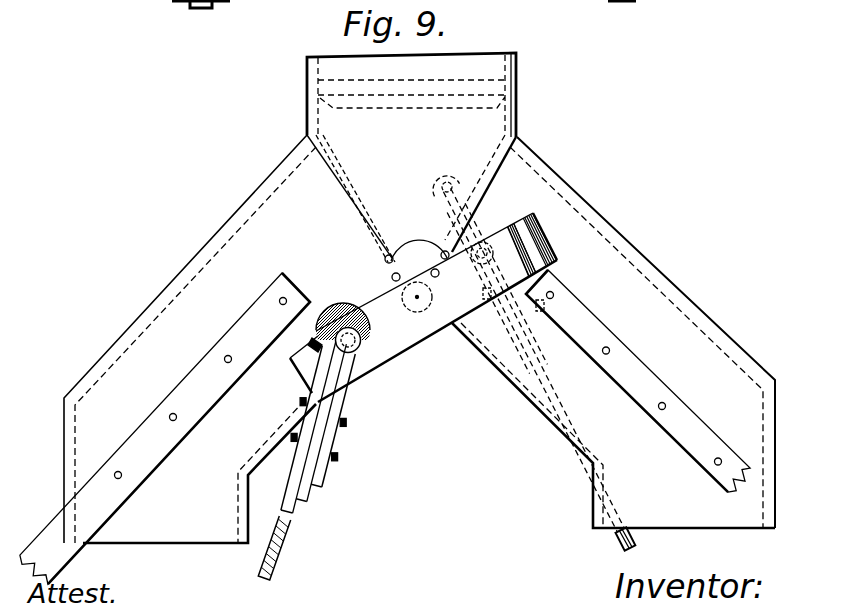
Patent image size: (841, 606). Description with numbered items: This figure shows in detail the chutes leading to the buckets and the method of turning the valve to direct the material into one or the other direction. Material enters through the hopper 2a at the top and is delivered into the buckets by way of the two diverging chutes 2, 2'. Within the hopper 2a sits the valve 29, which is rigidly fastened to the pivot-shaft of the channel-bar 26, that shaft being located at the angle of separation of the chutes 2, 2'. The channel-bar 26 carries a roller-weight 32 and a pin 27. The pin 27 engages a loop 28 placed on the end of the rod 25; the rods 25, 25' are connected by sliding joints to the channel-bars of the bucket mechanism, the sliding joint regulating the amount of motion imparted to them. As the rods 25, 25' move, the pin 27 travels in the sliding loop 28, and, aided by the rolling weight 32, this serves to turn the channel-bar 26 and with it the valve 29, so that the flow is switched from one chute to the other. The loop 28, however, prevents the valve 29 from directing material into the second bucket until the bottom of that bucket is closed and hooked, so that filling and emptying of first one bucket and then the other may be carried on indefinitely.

The hopper 2a is at (411, 155).
The chute 2 is at (165, 428).
The chute 2' is at (638, 381).
The rod 25 is at (283, 548).
The rod 25' is at (553, 368).
The channel-bar 26 is at (436, 307).
The pin 27 is at (339, 317).
The loop 28 is at (312, 424).
The valve 29 is at (355, 198).
The roller-weight 32 is at (356, 328).